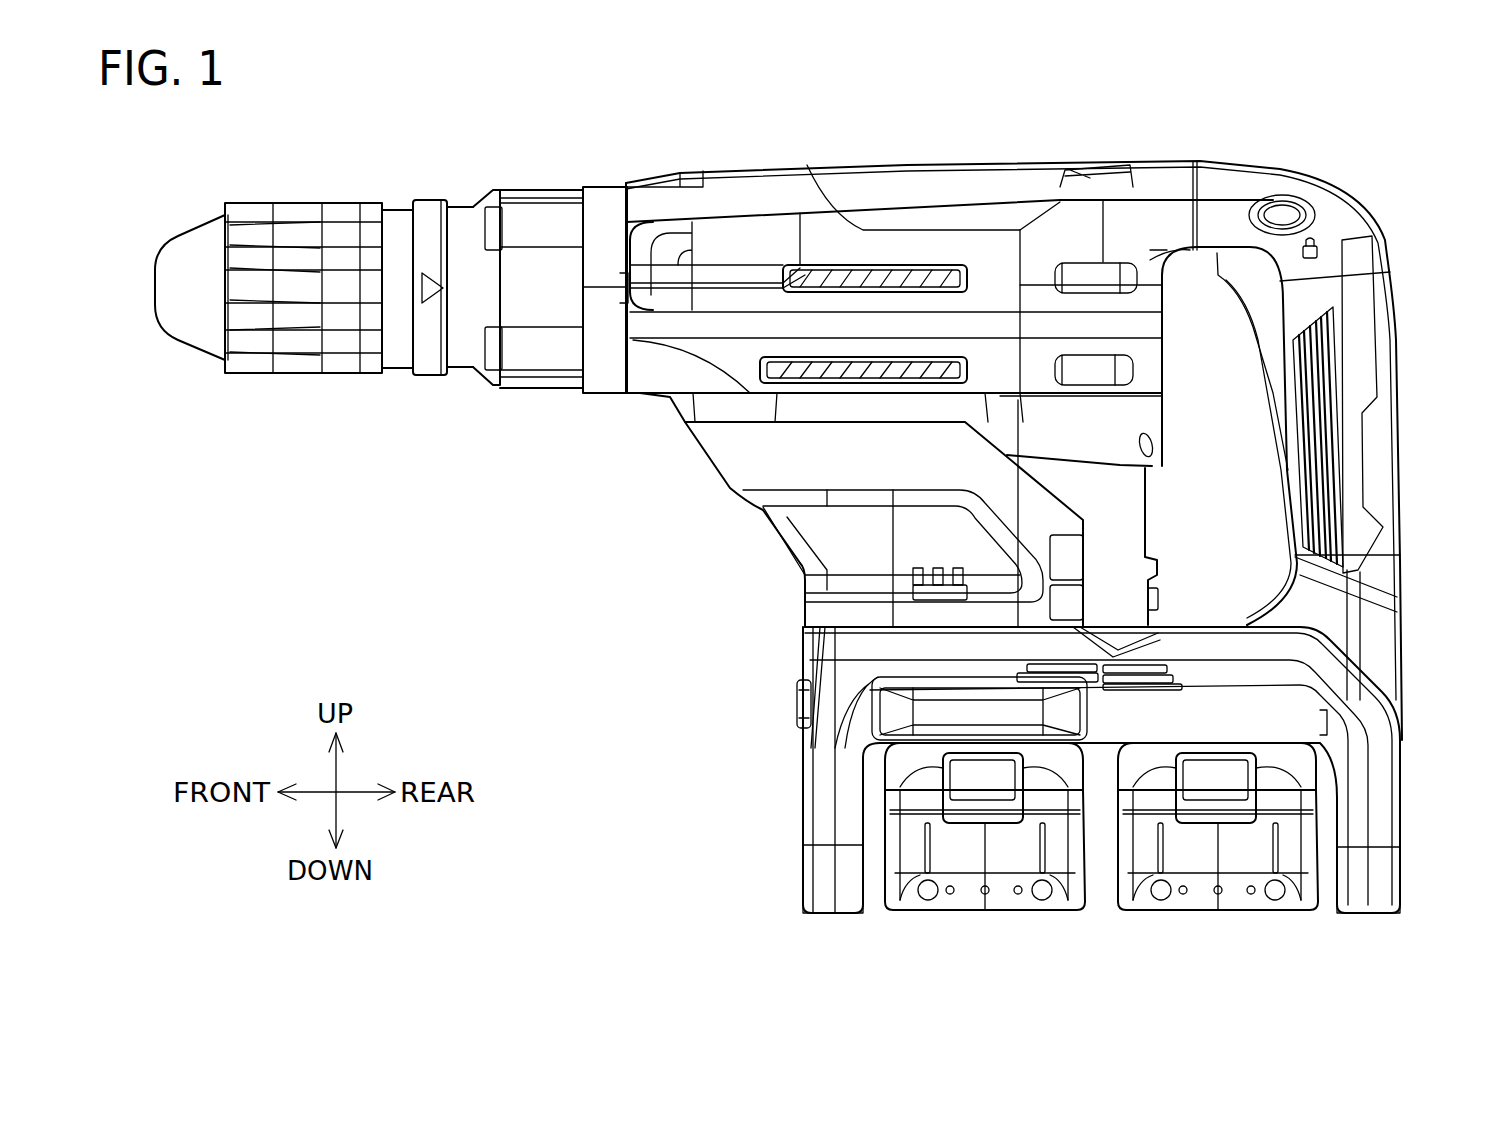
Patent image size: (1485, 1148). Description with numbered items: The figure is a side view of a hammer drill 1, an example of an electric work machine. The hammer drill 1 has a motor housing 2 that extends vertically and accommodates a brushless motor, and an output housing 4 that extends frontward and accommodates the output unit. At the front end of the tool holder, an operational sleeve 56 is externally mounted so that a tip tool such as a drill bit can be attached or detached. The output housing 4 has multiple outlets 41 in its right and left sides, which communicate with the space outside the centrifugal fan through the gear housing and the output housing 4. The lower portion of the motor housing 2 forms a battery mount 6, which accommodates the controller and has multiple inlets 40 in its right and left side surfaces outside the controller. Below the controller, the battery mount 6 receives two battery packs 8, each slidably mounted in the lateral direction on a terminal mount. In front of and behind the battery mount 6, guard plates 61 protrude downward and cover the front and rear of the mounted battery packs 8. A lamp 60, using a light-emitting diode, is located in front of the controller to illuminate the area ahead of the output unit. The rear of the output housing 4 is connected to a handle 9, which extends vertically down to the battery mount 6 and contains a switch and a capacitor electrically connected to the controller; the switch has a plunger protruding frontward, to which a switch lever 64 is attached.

The hammer drill 1 is at (1130, 125).
The motor housing 2 is at (815, 585).
The output housing 4 is at (757, 190).
The battery mount 6 is at (1227, 713).
The battery pack 8 is at (1005, 860).
The handle 9 is at (1387, 437).
The inlets 40 is at (1020, 672).
The outlets 41 is at (865, 265).
The operational sleeve 56 is at (430, 207).
The lamp 60 is at (797, 715).
The guard plates 61 is at (820, 830).
The switch lever 64 is at (1255, 352).